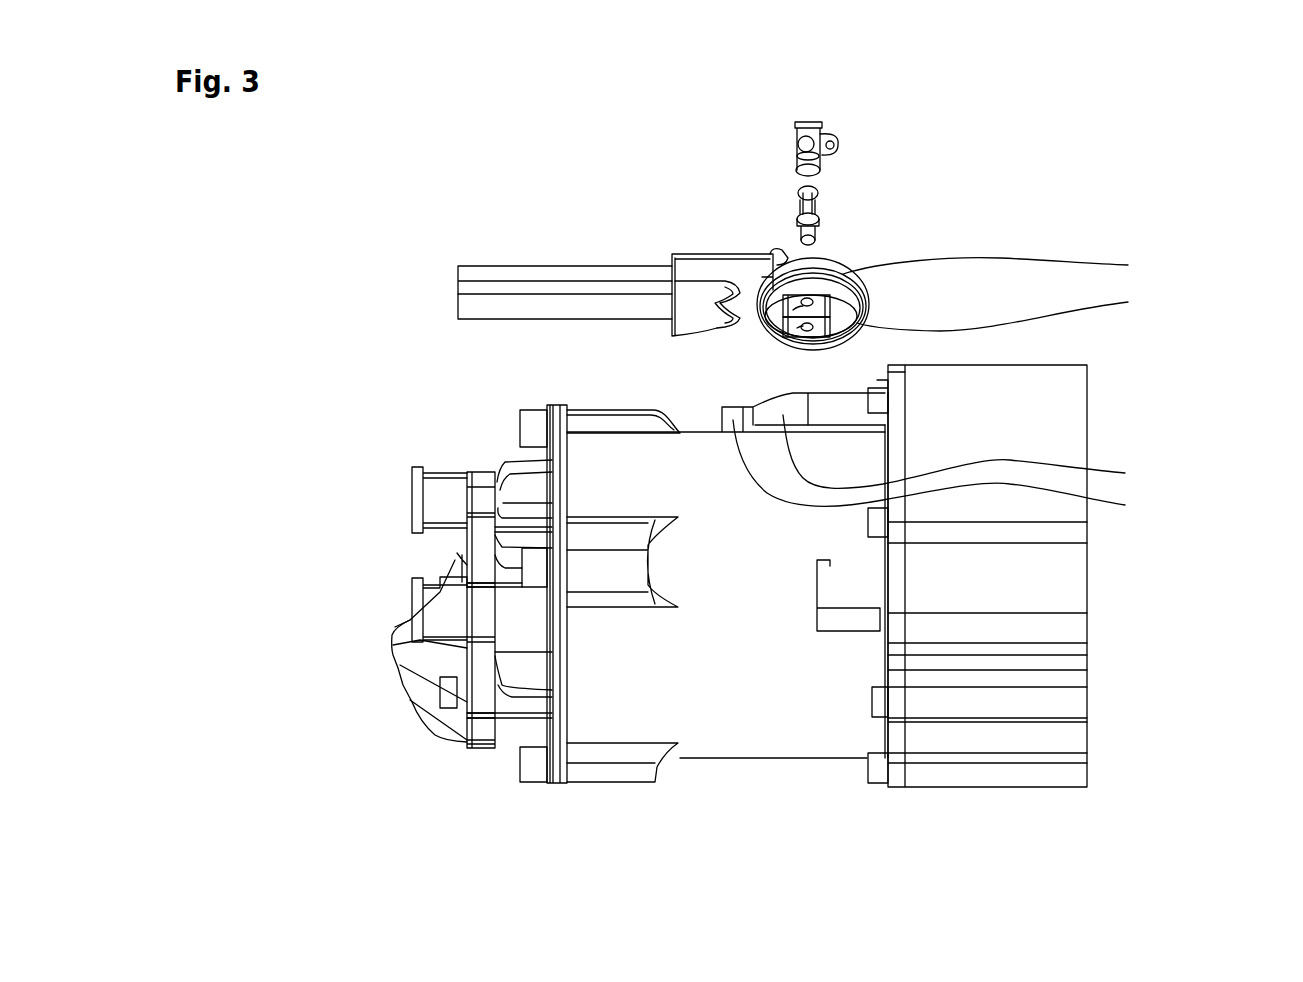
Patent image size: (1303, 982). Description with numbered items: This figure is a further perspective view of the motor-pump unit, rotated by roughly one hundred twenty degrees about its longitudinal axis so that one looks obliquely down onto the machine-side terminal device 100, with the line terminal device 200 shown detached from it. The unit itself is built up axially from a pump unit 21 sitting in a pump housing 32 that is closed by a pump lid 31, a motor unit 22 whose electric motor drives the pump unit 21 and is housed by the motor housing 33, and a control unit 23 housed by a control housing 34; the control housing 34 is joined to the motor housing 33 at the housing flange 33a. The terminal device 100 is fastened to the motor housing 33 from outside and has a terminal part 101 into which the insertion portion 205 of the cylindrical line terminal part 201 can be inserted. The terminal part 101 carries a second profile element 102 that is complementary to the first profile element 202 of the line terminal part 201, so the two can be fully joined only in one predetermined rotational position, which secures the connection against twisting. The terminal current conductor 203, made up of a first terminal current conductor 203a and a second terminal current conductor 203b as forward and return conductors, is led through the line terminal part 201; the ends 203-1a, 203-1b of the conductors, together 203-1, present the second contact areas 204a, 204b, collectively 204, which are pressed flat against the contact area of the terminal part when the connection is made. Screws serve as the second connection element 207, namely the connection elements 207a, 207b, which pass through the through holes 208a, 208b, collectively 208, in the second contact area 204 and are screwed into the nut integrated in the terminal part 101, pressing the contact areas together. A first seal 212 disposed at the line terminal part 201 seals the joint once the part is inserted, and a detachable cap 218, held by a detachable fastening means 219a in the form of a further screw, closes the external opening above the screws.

The line terminal device 200 is at (740, 228).
The line terminal part 201 is at (690, 262).
The first profile element 202 is at (705, 320).
The terminal current conductor 203 is at (345, 262).
The first terminal current conductor 203a is at (462, 300).
The second terminal current conductor 203b is at (462, 268).
The cable terminal 203-1 is at (990, 265).
The first terminal 203-1a is at (822, 330).
The second terminal 203-1b is at (822, 302).
The second contact area 204 is at (1198, 258).
The first wire 204a is at (1025, 310).
The second wire 204b is at (1018, 266).
The insertion portion 205 is at (764, 258).
The second connection element 207 is at (930, 178).
The connection element 207a is at (820, 222).
The connection element 207b is at (820, 193).
The through hole 208 is at (672, 348).
The first contact 208a is at (797, 328).
The second contact 208b is at (793, 310).
The first seal 212 is at (815, 292).
The cap 218 is at (797, 126).
The detachable fastening means 219a is at (834, 148).
The terminal device 100 is at (853, 370).
The terminal part 101 is at (977, 451).
The second profile element 102 is at (952, 469).
The pump unit 21 is at (555, 802).
The motor unit 22 is at (902, 802).
The control unit 23 is at (1087, 802).
The pump lid 31 is at (478, 470).
The pump housing 32 is at (497, 470).
The motor housing 33 is at (586, 455).
The housing flange 33a is at (897, 385).
The control housing 34 is at (1065, 416).